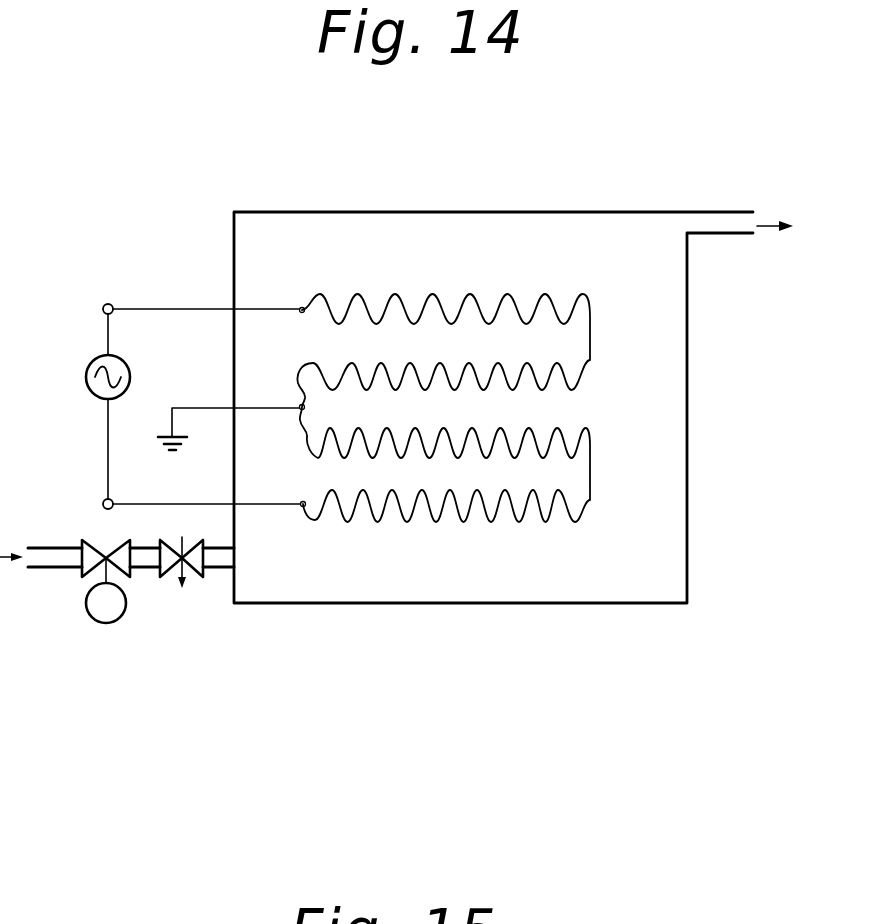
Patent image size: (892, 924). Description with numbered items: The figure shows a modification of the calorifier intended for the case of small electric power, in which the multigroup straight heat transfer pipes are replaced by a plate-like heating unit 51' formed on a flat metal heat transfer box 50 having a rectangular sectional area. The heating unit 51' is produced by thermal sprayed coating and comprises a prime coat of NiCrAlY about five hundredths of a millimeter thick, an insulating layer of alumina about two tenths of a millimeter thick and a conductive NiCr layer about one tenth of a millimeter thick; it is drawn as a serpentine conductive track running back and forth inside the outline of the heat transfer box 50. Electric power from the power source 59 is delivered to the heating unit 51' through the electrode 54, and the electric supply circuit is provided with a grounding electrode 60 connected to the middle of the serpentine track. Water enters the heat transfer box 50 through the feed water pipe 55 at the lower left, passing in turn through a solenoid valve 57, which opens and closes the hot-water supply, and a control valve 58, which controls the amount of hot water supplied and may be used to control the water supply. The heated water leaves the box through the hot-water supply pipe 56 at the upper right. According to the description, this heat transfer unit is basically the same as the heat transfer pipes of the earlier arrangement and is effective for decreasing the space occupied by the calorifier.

The heat transfer box 50 is at (410, 232).
The heating unit 51' is at (444, 341).
The electrode 54 is at (185, 308).
The feed water pipe 55 is at (50, 548).
The hot-water supply pipe 56 is at (724, 219).
The solenoid valve 57 is at (118, 623).
The control valve 58 is at (194, 573).
The power source 59 is at (130, 371).
The grounding electrode 60 is at (300, 411).